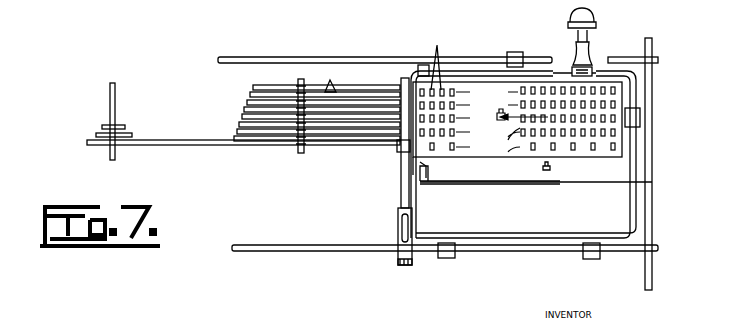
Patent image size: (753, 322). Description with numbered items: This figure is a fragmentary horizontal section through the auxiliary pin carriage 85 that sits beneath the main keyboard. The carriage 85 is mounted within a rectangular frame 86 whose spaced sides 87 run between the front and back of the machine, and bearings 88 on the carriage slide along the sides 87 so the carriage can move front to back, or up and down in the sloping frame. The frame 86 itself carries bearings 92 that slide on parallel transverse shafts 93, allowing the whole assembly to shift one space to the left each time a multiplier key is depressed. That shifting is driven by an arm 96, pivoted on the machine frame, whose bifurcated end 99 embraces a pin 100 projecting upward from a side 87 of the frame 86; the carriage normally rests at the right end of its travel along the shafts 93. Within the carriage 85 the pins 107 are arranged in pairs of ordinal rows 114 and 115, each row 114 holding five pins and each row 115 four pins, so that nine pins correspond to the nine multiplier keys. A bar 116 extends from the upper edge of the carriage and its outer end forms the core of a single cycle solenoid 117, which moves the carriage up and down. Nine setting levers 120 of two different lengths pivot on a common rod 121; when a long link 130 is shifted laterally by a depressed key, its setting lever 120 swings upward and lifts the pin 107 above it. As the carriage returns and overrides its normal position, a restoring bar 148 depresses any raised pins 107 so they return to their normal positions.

The auxiliary pin carriage 85 is at (622, 138).
The rectangular frame 86 is at (540, 228).
The sides of the frame 87 is at (636, 174).
The bearings 88 is at (418, 72).
The bearings 92 is at (514, 52).
The transverse shafts 93 is at (410, 57).
The arm 96 is at (398, 254).
The bifurcated end 99 is at (410, 220).
The pin 100 is at (400, 221).
The pins 107 is at (444, 33).
The ordinal row 114 is at (455, 157).
The ordinal row 115 is at (418, 150).
The bar 116 is at (587, 52).
The single cycle solenoid 117 is at (592, 15).
The setting levers 120 is at (332, 88).
The common rod 121 is at (297, 81).
The long link 130 is at (141, 145).
The restoring bar 148 is at (428, 170).